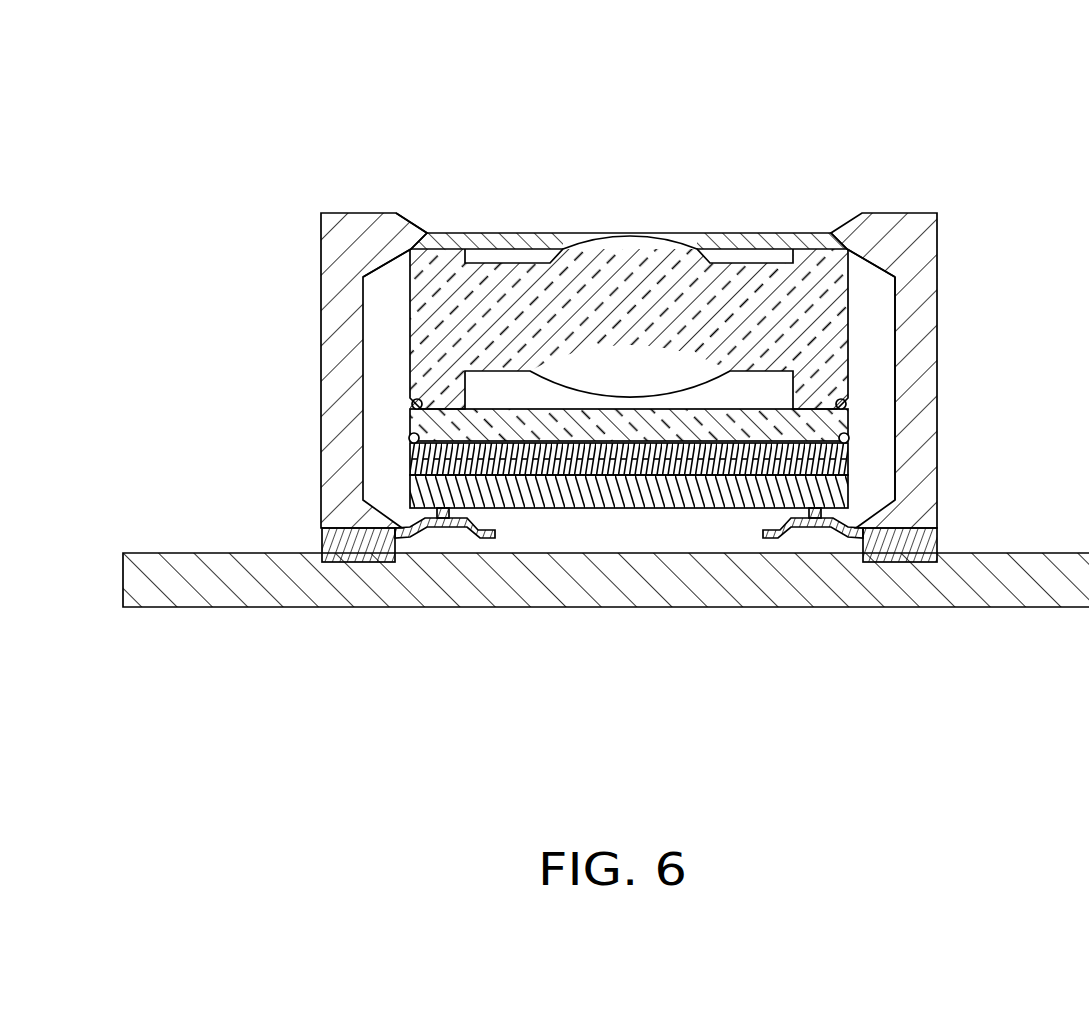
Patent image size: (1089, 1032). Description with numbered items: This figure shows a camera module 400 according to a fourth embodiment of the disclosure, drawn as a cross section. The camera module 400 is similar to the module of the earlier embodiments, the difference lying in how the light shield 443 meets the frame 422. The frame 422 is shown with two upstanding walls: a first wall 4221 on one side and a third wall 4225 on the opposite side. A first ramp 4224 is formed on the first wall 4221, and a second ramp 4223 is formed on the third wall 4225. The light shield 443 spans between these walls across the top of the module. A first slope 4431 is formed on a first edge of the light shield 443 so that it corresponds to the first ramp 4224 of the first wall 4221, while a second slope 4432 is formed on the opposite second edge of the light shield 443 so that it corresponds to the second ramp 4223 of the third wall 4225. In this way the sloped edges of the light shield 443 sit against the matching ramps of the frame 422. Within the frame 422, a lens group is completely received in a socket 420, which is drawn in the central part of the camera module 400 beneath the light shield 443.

The camera module 400 is at (745, 112).
The socket 420 is at (335, 357).
The frame 422 is at (892, 238).
The first wall 4221 is at (918, 285).
The second ramp 4223 is at (385, 264).
The first ramp 4224 is at (876, 266).
The third wall 4225 is at (342, 312).
The light shield 443 is at (755, 243).
The first slope 4431 is at (841, 229).
The second slope 4432 is at (420, 232).